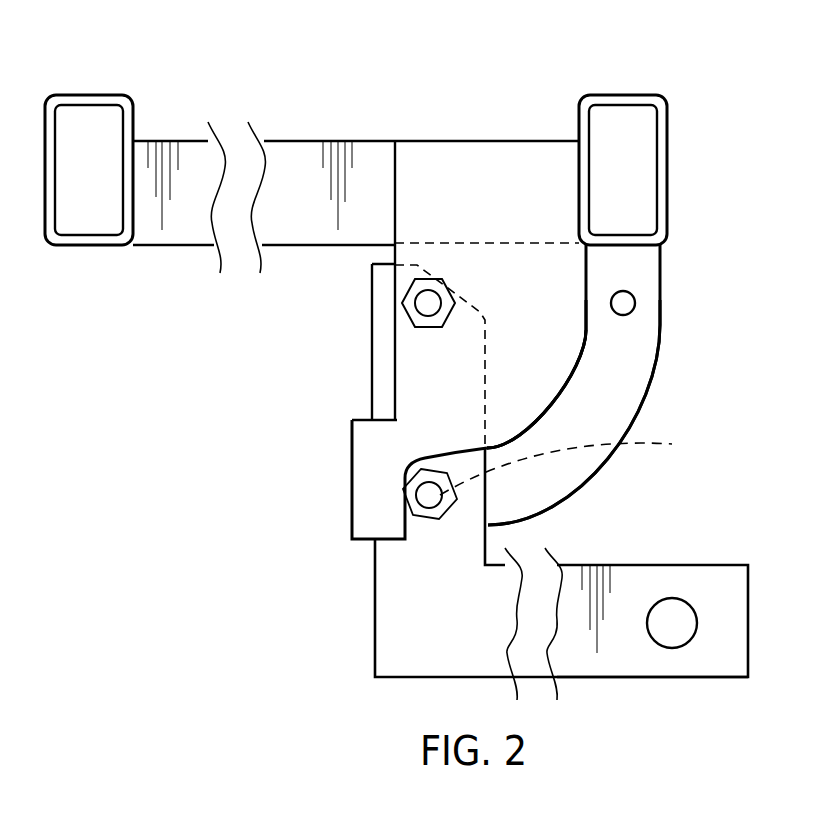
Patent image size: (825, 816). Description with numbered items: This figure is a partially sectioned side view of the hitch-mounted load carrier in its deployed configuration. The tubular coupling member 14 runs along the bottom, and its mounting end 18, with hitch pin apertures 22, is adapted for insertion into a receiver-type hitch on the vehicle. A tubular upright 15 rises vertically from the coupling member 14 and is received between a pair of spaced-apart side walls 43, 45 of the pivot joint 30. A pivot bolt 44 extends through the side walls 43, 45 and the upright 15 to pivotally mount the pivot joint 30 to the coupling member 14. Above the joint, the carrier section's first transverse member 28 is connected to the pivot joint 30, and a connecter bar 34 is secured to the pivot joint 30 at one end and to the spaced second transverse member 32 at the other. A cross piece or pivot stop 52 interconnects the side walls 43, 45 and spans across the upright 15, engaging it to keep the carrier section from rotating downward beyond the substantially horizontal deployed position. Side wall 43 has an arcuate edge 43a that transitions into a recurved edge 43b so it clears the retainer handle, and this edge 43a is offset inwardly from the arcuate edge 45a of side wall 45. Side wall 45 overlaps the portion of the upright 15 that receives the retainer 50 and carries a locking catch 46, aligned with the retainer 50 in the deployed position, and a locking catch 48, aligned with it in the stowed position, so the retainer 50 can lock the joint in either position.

The coupling member 14 is at (627, 560).
The tubular upright 15 is at (387, 378).
The mounting end 18 is at (682, 692).
The hitch pin apertures 22 is at (663, 617).
The first transverse member 28 is at (668, 168).
The pivot joint 30 is at (667, 403).
The second transverse member 32 is at (90, 95).
The connecter bar 34 is at (290, 141).
The side wall 43 is at (547, 325).
The arcuate edge 43a is at (547, 408).
The recurved edge 43b is at (405, 465).
The pivot bolt 44 is at (403, 302).
The side wall 45 is at (612, 412).
The arcuate edge 45a is at (653, 377).
The locking catch 46 is at (577, 469).
The locking catch 48 is at (635, 297).
The retainer 50 is at (447, 515).
The pivot stop 52 is at (352, 480).